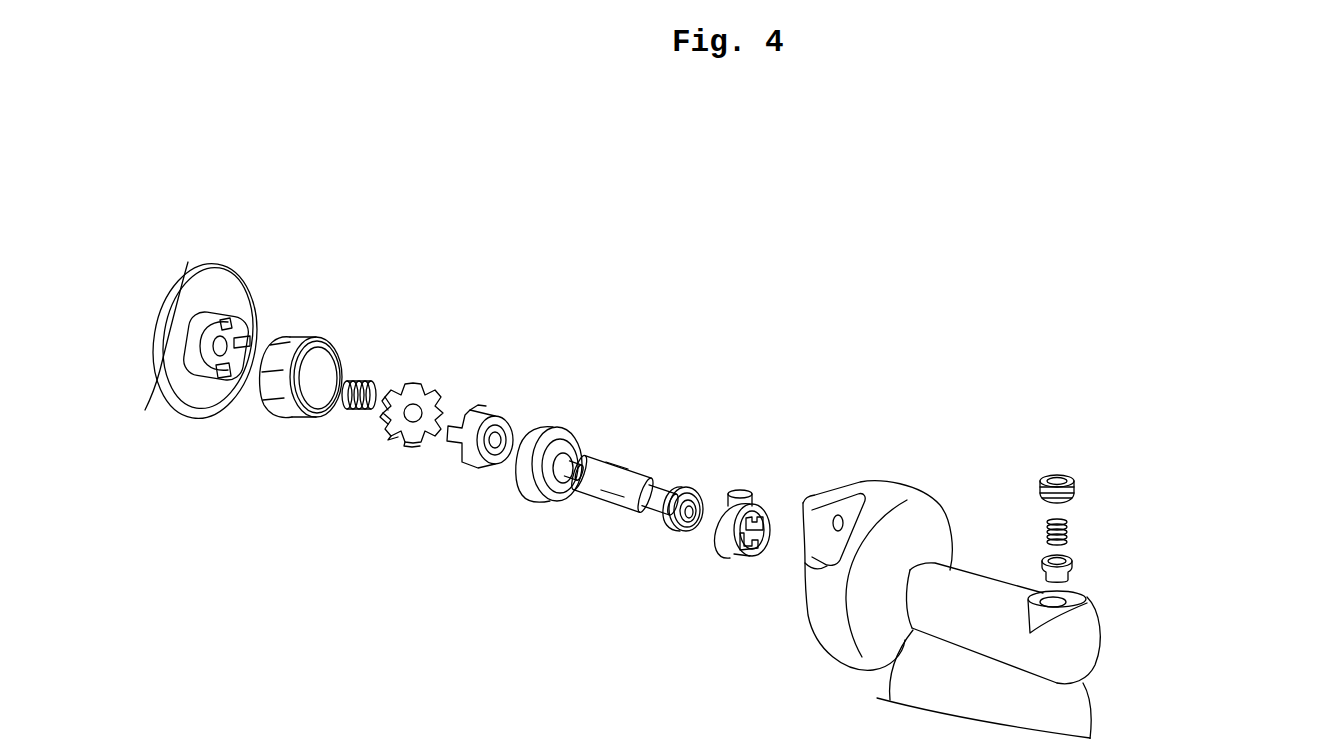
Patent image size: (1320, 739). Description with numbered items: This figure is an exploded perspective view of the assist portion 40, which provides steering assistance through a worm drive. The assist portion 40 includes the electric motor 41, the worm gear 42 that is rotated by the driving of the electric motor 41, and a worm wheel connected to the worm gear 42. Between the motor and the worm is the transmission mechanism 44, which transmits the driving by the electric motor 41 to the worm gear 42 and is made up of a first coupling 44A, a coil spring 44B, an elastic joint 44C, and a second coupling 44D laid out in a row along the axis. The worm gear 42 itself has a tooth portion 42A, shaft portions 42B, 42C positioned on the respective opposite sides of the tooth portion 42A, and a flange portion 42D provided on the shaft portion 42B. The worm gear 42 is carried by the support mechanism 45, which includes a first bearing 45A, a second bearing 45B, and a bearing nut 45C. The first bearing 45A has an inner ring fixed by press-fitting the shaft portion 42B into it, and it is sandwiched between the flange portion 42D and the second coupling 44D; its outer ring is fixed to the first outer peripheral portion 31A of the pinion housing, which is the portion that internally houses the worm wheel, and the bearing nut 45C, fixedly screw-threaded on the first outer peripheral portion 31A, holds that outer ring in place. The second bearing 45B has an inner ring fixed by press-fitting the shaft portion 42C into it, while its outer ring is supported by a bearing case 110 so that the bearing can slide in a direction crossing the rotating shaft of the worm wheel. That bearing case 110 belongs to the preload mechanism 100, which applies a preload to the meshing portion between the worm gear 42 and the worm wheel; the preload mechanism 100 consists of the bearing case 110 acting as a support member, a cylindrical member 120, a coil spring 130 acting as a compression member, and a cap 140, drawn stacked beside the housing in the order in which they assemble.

The assist portion 40 is at (1110, 246).
The electric motor 41 is at (213, 252).
The transmission mechanism 44 is at (503, 194).
The first coupling 44A is at (220, 318).
The coil spring 44B is at (369, 380).
The elastic joint 44C is at (426, 382).
The second coupling 44D is at (489, 413).
The worm gear 42 is at (740, 279).
The tooth portion 42A is at (657, 492).
The shaft portion 42B is at (612, 472).
The shaft portion 42C is at (662, 485).
The flange portion 42D is at (562, 463).
The support mechanism 45 is at (585, 606).
The first bearing 45A is at (532, 497).
The second bearing 45B is at (668, 518).
The bearing nut 45C is at (290, 418).
The first outer peripheral portion 31A is at (935, 524).
The preload mechanism 100 is at (1210, 408).
The bearing case 110 is at (745, 492).
The cylindrical member 120 is at (1072, 566).
The coil spring 130 is at (1069, 530).
The cap 140 is at (1076, 481).